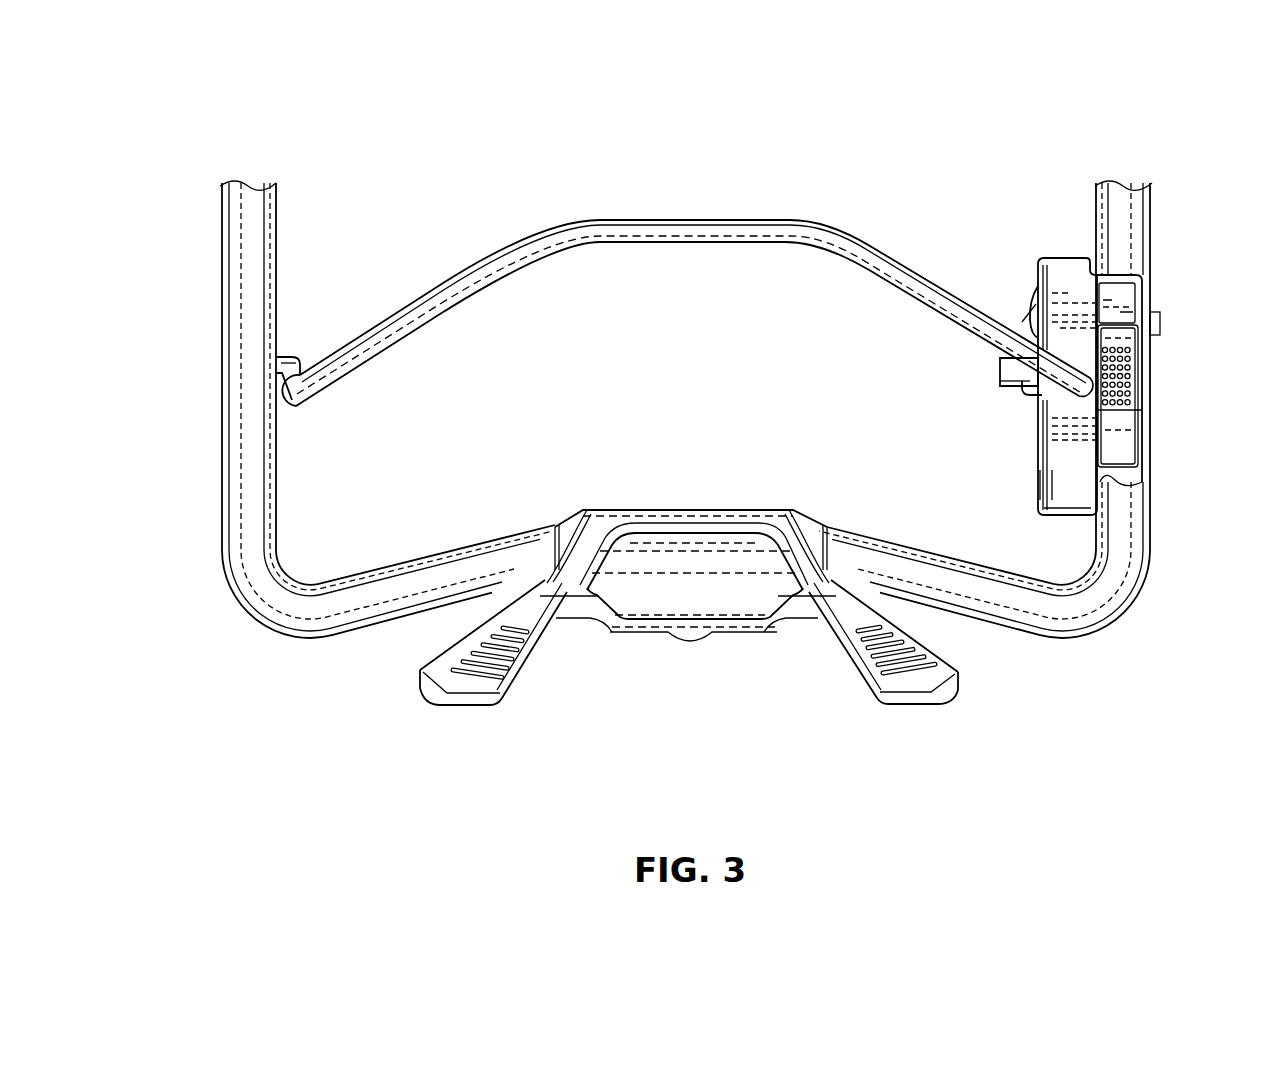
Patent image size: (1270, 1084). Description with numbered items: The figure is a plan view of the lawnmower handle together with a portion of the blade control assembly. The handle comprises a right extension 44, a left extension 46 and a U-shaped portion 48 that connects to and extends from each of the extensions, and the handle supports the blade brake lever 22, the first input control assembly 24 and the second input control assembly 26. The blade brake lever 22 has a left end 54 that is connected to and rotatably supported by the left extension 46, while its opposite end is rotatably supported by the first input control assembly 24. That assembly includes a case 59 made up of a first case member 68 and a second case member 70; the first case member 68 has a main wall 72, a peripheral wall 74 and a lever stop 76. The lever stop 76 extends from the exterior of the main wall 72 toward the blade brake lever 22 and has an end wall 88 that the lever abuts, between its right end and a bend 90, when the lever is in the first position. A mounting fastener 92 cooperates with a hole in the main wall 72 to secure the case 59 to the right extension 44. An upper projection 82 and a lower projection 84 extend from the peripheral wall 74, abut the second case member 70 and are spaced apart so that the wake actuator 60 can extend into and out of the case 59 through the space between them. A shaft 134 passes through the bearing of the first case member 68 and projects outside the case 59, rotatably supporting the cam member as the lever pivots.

The blade brake lever 22 is at (692, 220).
The first input control assembly 24 is at (1068, 333).
The second input control assembly 26 is at (965, 690).
The right extension 44 is at (1152, 228).
The left extension 46 is at (222, 235).
The U-shaped portion 48 is at (515, 532).
The left end 54 is at (292, 358).
The case 59 is at (1038, 452).
The wake actuator 60 is at (1123, 445).
The first case member 68 is at (975, 485).
The second case member 70 is at (1152, 372).
The main wall 72 is at (1040, 485).
The peripheral wall 74 is at (1063, 498).
The lever stop 76 is at (1021, 320).
The upper projection 82 is at (1117, 297).
The lower projection 84 is at (1114, 483).
The end wall 88 is at (1040, 405).
The bend 90 is at (1021, 394).
The mounting fastener 92 is at (1160, 323).
The shaft 134 is at (999, 370).